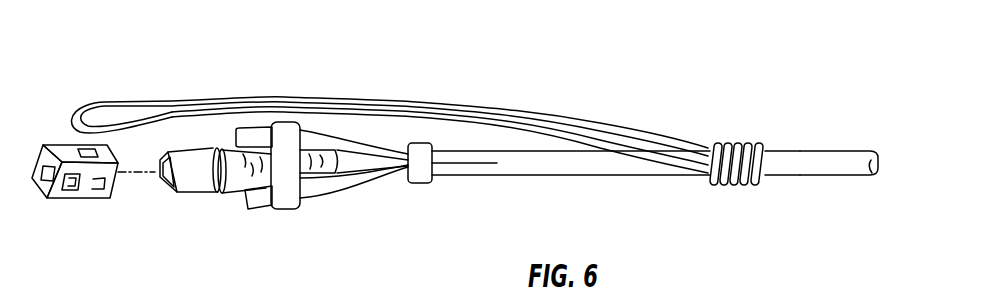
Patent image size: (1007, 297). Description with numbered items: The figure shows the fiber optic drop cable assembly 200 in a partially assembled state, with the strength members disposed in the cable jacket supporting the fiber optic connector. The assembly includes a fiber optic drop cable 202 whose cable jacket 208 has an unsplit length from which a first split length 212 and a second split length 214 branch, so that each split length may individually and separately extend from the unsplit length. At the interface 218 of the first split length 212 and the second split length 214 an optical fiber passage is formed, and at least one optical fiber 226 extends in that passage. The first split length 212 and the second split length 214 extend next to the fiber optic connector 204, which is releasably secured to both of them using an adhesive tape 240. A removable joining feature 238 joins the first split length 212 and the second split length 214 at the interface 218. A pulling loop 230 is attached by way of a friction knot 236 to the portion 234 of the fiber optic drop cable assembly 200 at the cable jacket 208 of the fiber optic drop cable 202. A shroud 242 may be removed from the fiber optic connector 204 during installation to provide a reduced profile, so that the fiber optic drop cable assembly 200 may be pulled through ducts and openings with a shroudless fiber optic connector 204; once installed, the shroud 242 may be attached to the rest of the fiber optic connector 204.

The fiber optic drop cable assembly 200 is at (650, 58).
The fiber optic drop cable 202 is at (797, 177).
The fiber optic connector 204 is at (188, 213).
The cable jacket 208 is at (648, 177).
The first split length 212 is at (347, 192).
The second split length 214 is at (343, 137).
The interface 218 is at (458, 165).
The optical fiber 226 is at (358, 165).
The pulling loop 230 is at (150, 100).
The portion 234 is at (768, 152).
The friction knot 236 is at (731, 143).
The removable joining feature 238 is at (418, 143).
The adhesive tape 240 is at (287, 122).
The shroud 242 is at (59, 145).